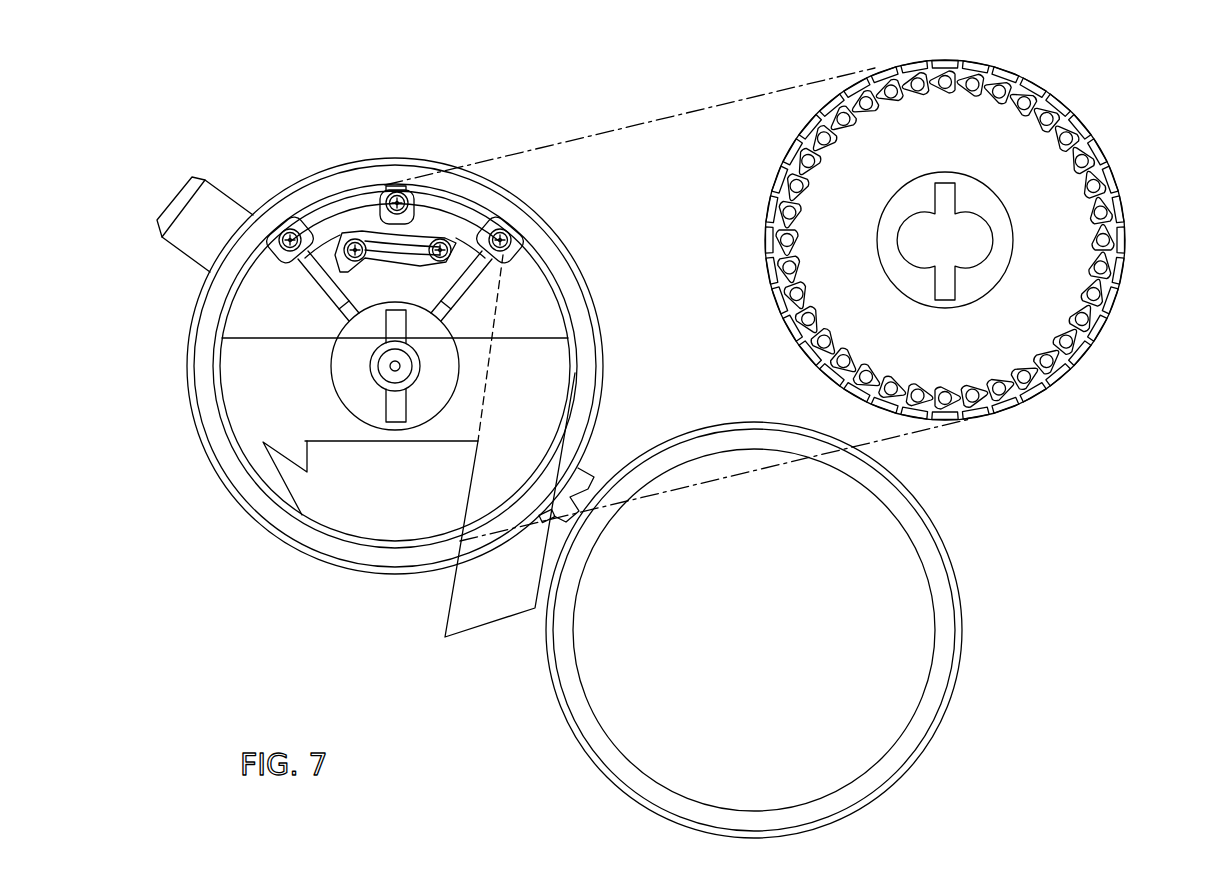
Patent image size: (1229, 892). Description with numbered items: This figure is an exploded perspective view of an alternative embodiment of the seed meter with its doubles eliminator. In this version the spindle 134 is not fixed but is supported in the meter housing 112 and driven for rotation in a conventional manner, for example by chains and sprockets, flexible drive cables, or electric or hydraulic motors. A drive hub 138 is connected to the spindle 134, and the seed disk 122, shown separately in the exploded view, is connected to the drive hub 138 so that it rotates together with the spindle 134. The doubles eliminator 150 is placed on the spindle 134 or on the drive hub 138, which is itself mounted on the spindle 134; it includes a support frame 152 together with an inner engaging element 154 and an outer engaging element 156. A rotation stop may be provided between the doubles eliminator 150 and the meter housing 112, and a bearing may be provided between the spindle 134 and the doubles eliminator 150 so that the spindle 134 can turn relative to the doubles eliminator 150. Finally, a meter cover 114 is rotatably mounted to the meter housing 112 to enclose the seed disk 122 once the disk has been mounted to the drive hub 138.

The meter housing 112 is at (352, 163).
The meter cover 114 is at (950, 548).
The seed disk 122 is at (1113, 135).
The spindle 134 is at (438, 378).
The drive hub 138 is at (356, 373).
The doubles eliminator 150 is at (480, 299).
The support frame 152 is at (330, 297).
The inner engaging element 154 is at (378, 255).
The outer engaging element 156 is at (320, 207).